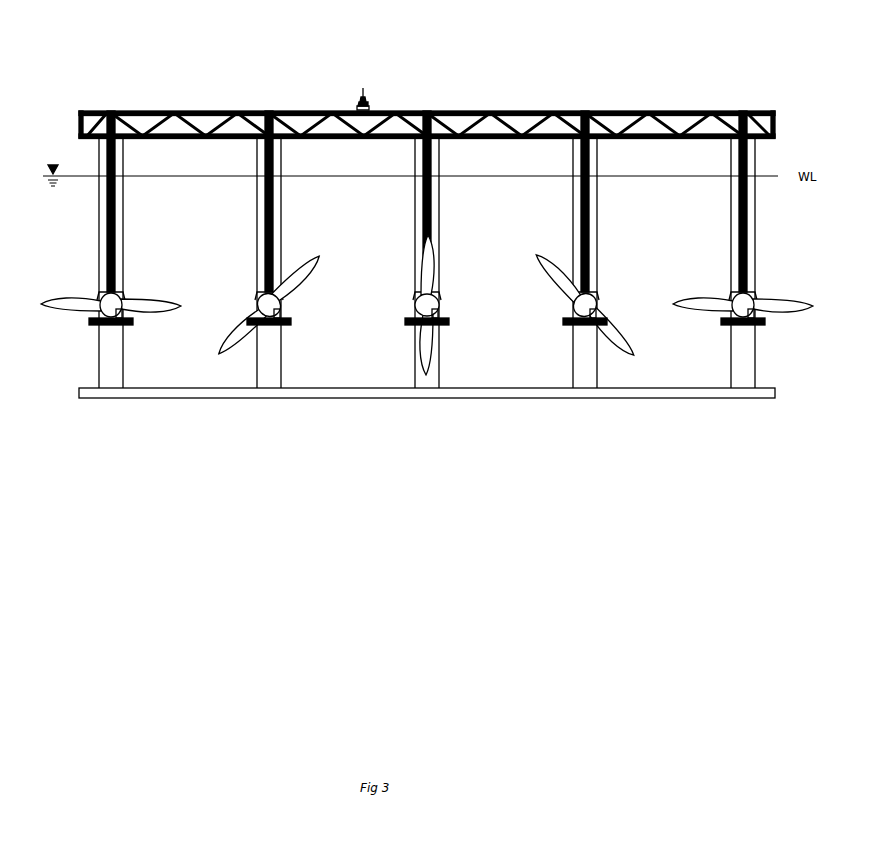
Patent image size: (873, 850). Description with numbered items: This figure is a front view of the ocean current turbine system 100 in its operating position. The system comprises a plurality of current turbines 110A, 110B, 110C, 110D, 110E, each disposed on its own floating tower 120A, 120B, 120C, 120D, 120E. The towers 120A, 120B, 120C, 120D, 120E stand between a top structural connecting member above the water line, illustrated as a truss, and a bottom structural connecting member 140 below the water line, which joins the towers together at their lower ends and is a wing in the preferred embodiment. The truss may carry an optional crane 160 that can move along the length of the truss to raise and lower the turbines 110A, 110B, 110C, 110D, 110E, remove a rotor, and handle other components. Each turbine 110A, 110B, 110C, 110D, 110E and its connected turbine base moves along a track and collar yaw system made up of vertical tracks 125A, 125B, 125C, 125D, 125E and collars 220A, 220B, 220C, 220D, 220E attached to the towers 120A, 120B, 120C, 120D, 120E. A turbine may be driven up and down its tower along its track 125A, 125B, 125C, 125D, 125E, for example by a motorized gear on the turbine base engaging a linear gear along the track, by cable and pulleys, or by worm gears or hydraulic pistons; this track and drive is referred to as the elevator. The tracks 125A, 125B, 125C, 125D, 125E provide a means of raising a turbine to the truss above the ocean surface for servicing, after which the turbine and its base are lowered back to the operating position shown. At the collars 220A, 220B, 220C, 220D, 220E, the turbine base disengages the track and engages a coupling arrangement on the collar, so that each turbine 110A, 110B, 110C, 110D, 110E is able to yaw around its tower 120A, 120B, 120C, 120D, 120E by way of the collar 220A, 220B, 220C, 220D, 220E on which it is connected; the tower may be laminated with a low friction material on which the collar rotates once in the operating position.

The ocean current turbine system 100 is at (143, 96).
The crane 160 is at (364, 86).
The bottom structural connecting member 140 is at (427, 399).
The current turbine 110A is at (72, 300).
The current turbine 110B is at (233, 342).
The current turbine 110C is at (418, 276).
The current turbine 110D is at (540, 258).
The current turbine 110E is at (709, 299).
The floating tower 120A is at (97, 216).
The floating tower 120B is at (256, 220).
The floating tower 120C is at (414, 216).
The floating tower 120D is at (572, 198).
The floating tower 120E is at (730, 210).
The track 125A is at (116, 205).
The track 125B is at (275, 205).
The track 125C is at (433, 205).
The track 125D is at (591, 205).
The track 125E is at (749, 205).
The collar 220A is at (130, 326).
The collar 220B is at (291, 324).
The collar 220C is at (449, 326).
The collar 220D is at (604, 292).
The collar 220E is at (767, 326).